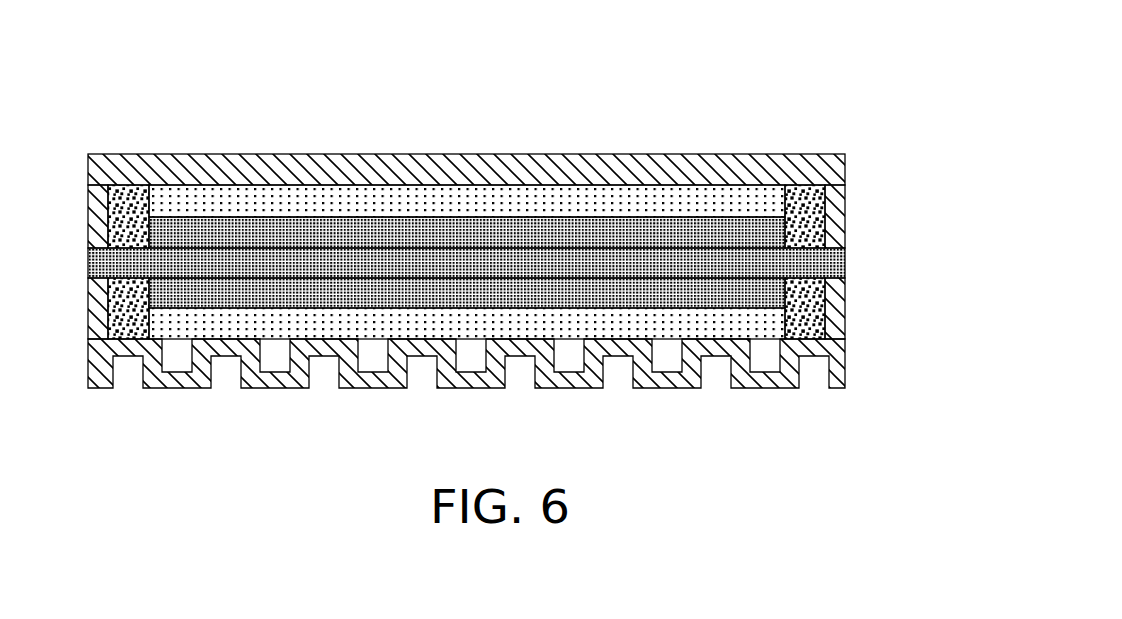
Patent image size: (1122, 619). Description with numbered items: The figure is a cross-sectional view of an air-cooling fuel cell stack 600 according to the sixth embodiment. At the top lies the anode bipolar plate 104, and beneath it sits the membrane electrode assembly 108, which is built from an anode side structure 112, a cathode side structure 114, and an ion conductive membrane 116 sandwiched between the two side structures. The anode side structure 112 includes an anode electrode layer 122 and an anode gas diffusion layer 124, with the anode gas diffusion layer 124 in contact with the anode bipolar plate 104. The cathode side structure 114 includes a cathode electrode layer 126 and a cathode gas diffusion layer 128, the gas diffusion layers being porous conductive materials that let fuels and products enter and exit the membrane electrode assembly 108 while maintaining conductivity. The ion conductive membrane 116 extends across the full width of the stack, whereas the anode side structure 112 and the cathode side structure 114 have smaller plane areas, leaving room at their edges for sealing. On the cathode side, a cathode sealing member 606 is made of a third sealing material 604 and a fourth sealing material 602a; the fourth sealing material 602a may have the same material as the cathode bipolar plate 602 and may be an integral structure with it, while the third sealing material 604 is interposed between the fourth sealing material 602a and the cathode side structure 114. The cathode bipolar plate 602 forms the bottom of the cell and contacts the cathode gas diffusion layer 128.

The air-cooling fuel cell stack 600 is at (153, 109).
The anode bipolar plate 104 is at (714, 156).
The membrane electrode assembly 108 is at (847, 15).
The anode side structure 112 is at (615, 102).
The cathode side structure 114 is at (458, 102).
The ion conductive membrane 116 is at (101, 262).
The anode electrode layer 122 is at (607, 232).
The anode gas diffusion layer 124 is at (527, 202).
The cathode electrode layer 126 is at (377, 292).
The cathode gas diffusion layer 128 is at (455, 325).
The cathode bipolar plate 602 is at (766, 382).
The fourth sealing material 602a is at (837, 326).
The third sealing material 604 is at (812, 305).
The cathode sealing member 606 is at (910, 280).